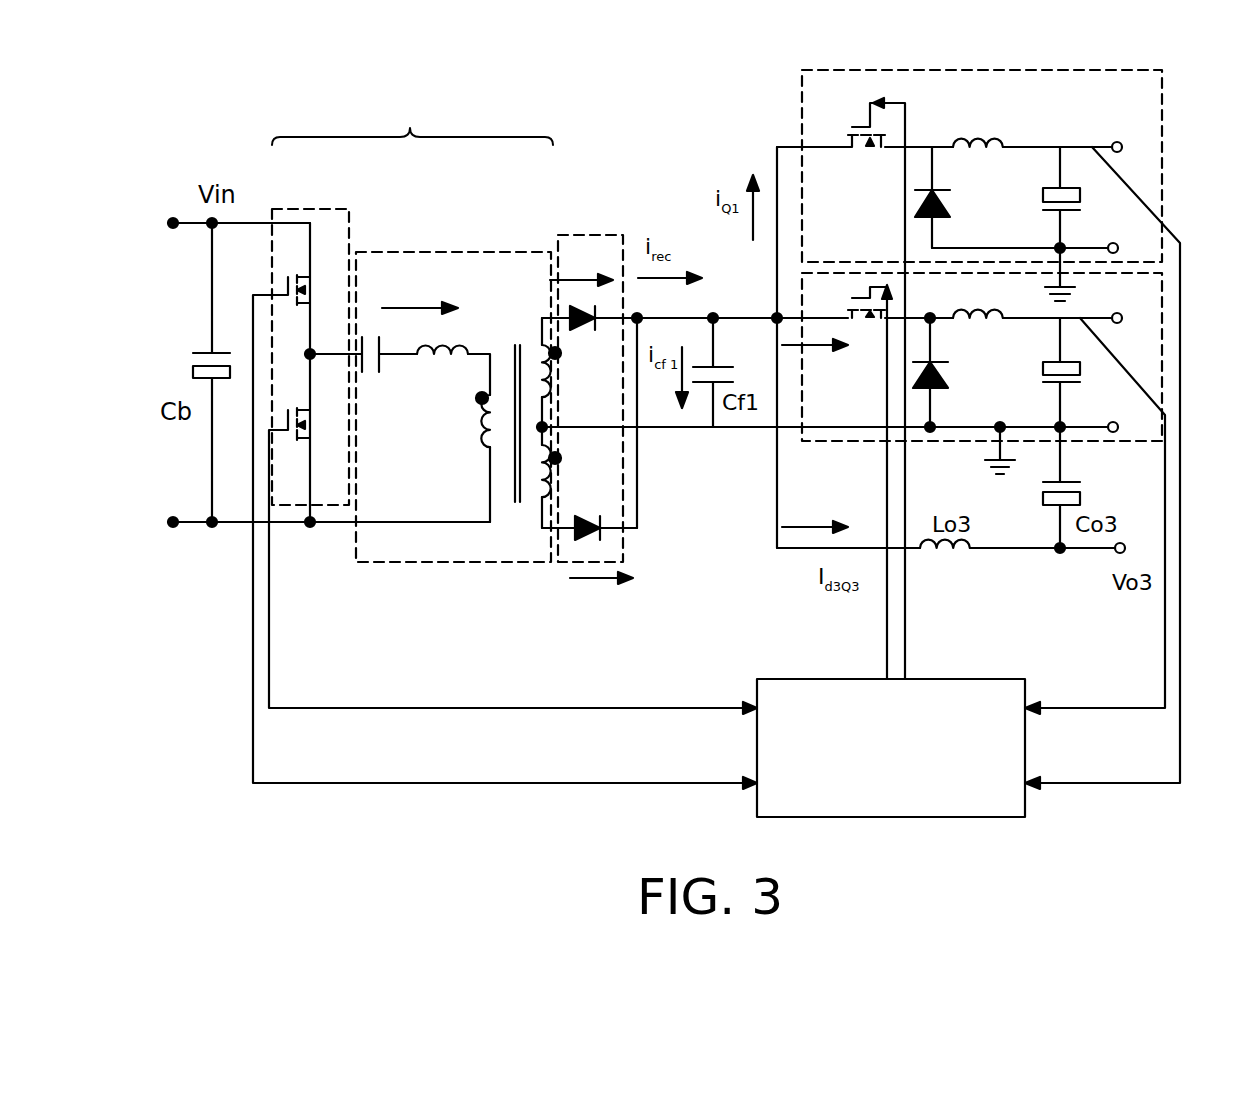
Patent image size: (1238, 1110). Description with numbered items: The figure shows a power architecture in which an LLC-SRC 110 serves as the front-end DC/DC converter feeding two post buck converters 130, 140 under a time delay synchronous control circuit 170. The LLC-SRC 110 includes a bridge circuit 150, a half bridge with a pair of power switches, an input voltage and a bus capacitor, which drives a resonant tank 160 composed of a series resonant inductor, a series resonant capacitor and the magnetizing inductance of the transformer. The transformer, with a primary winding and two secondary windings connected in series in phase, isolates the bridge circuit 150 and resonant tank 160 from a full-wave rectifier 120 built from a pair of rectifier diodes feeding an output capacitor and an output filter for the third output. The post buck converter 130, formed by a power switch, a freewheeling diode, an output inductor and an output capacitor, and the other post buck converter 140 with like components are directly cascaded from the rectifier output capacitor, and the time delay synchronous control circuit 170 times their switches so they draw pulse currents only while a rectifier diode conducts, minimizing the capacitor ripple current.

The LLC-SRC 110 is at (428, 124).
The full-wave rectifier 120 is at (580, 228).
The post buck converter 130 is at (858, 60).
The post buck converter 140 is at (790, 432).
The bridge circuit 150 is at (300, 206).
The resonant tank 160 is at (448, 247).
The time delay synchronous control circuit 170 is at (890, 817).